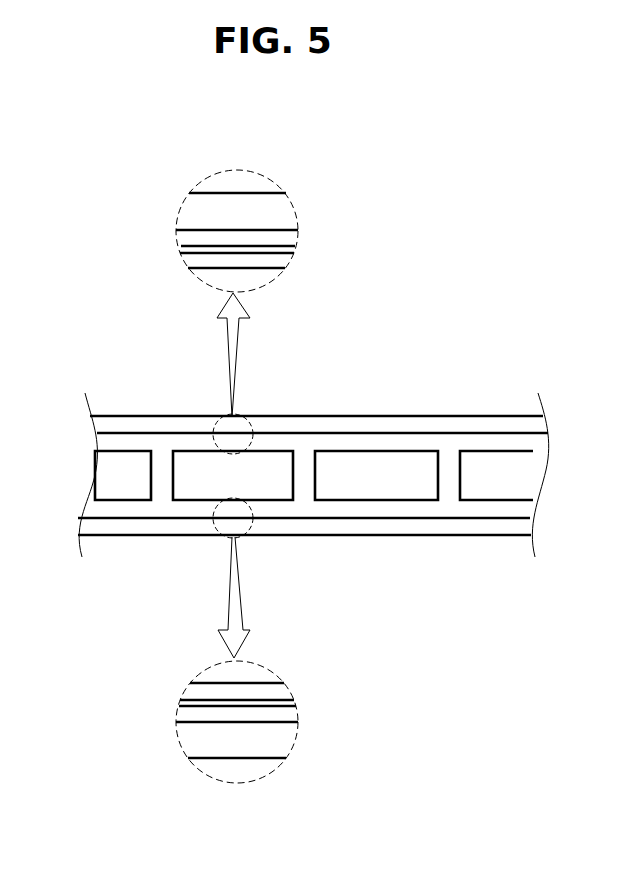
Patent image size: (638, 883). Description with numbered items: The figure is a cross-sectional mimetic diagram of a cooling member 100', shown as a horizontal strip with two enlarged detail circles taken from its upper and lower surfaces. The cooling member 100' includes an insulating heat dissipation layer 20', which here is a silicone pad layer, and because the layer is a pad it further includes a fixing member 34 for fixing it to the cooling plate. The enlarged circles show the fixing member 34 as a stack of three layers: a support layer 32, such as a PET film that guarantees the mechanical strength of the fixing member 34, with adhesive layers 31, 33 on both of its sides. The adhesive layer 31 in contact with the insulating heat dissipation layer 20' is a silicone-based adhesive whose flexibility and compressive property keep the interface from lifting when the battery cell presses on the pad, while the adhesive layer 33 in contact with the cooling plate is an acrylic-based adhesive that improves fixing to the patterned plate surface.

The cooling member 100' is at (313, 476).
The insulating heat dissipation layer 20' is at (313, 477).
The adhesive layer 31 is at (292, 238).
The support layer 32 is at (297, 248).
The adhesive layer 33 is at (285, 262).
The fixing member 34 is at (385, 210).